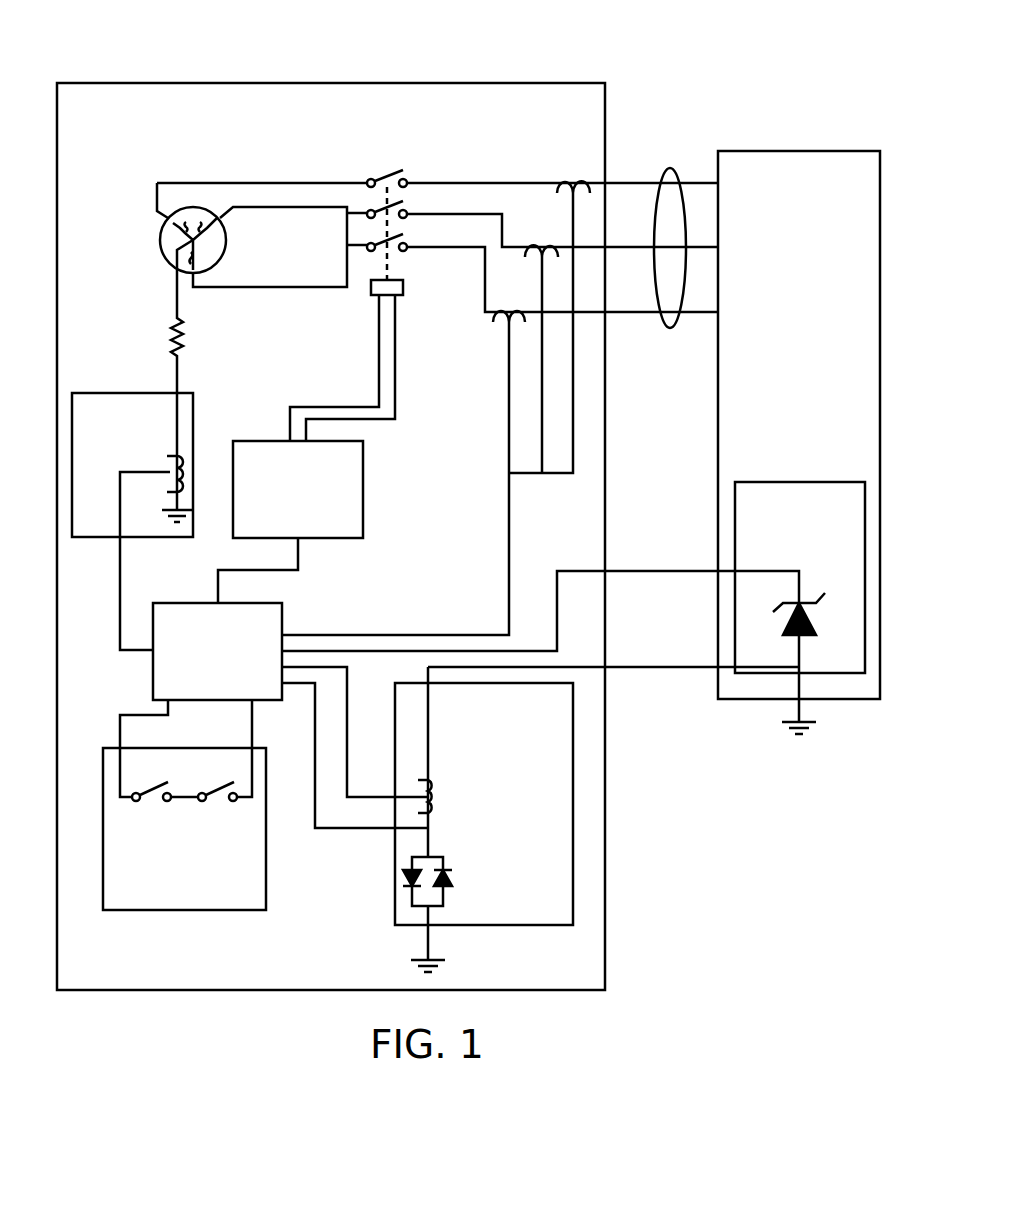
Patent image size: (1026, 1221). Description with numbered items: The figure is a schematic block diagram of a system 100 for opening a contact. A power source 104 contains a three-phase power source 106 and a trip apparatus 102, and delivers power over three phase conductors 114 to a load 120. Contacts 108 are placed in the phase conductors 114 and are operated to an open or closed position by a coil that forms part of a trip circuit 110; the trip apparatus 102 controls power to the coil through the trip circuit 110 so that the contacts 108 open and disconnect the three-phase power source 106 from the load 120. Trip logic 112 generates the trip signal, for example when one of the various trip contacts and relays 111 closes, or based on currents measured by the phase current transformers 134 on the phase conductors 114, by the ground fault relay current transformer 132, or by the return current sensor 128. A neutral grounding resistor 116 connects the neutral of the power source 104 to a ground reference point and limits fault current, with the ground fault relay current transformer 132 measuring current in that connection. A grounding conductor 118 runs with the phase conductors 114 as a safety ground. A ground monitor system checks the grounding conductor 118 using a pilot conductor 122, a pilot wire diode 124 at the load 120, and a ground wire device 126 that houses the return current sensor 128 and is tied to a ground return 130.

The system 100 is at (112, 35).
The trip apparatus 102 is at (290, 522).
The power source 104 is at (276, 372).
The three-phase power source 106 is at (252, 235).
The contacts 108 is at (318, 193).
The trip circuit 110 is at (380, 314).
The various trip contacts and relays 111 is at (184, 805).
The trip logic 112 is at (217, 651).
The phase conductors 114 is at (670, 168).
The neutral grounding resistor 116 is at (227, 381).
The grounding conductor 118 is at (613, 707).
The load 120 is at (799, 425).
The pilot conductor 122 is at (540, 611).
The pilot wire diode (PWD) 124 is at (800, 608).
The ground wire device (GWD) 126 is at (427, 819).
The return current sensor 128 is at (403, 786).
The ground return 130 is at (363, 819).
The ground fault relay current transformer (GFR CT) 132 is at (132, 521).
The phase current transformers (CTs) 134 is at (436, 408).